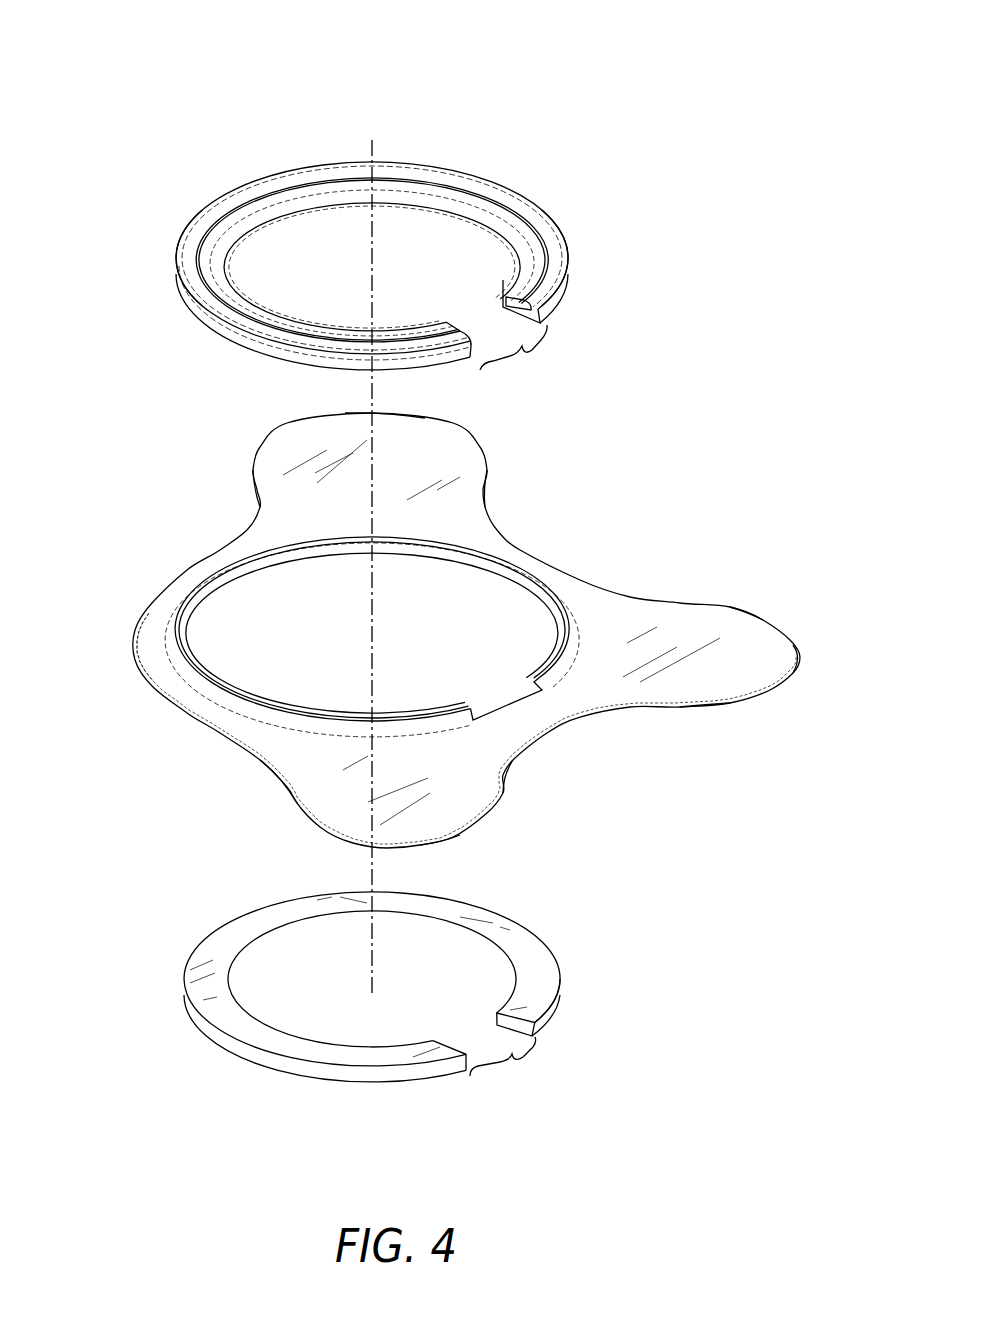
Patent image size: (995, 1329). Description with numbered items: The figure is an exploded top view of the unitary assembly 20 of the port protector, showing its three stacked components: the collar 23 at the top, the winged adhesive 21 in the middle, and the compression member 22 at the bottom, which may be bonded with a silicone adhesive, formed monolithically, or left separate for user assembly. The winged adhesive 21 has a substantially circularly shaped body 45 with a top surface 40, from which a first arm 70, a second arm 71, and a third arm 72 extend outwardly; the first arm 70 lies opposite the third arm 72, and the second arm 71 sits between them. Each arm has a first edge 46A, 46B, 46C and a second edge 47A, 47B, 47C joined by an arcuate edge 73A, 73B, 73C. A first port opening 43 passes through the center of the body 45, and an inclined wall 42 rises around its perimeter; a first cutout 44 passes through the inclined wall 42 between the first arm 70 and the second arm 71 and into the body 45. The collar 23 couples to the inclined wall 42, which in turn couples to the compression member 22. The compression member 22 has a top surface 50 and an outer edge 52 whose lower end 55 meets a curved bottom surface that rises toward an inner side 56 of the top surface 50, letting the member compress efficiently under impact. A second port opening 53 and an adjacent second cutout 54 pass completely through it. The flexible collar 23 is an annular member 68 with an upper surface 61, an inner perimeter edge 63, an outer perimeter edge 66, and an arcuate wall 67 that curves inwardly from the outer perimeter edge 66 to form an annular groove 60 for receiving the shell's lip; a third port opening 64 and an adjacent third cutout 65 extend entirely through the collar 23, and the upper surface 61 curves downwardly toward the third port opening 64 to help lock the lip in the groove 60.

The unitary assembly 20 is at (100, 80).
The winged adhesive 21 is at (603, 600).
The compression member 22 is at (535, 945).
The collar 23 is at (443, 165).
The top surface 40 is at (470, 627).
The inclined wall 42 is at (230, 700).
The first port opening 43 is at (248, 606).
The first cutout 44 is at (510, 695).
The body 45 is at (160, 627).
The first edge 46A is at (287, 788).
The first edge 46B is at (700, 705).
The first edge 46C is at (488, 488).
The second edge 47A is at (505, 800).
The second edge 47B is at (748, 612).
The second edge 47C is at (250, 478).
The top surface 50 is at (374, 980).
The outer edge 52 is at (553, 1012).
The second port opening 53 is at (278, 963).
The second cutout 54 is at (503, 1069).
The lower end 55 is at (540, 1033).
The inner side 56 is at (437, 905).
The annular groove 60 is at (357, 251).
The upper surface 61 is at (233, 205).
The inner perimeter edge 63 is at (504, 292).
The third port opening 64 is at (318, 242).
The third cutout 65 is at (513, 358).
The outer perimeter edge 66 is at (200, 293).
The arcuate wall 67 is at (560, 262).
The annular member 68 is at (188, 262).
The first arm 70 is at (332, 803).
The second arm 71 is at (778, 640).
The third arm 72 is at (447, 443).
The arcuate edge 73A is at (453, 843).
The arcuate edge 73B is at (800, 660).
The arcuate edge 73C is at (393, 413).